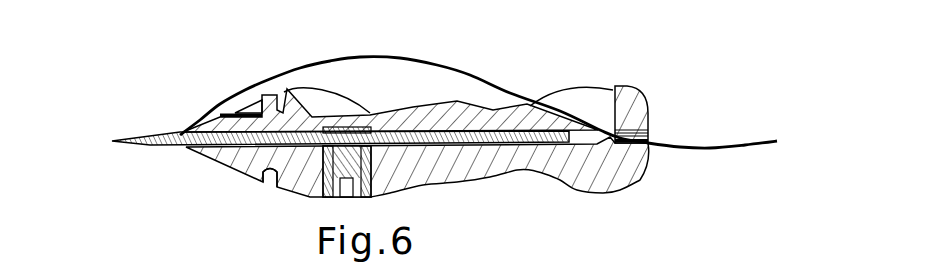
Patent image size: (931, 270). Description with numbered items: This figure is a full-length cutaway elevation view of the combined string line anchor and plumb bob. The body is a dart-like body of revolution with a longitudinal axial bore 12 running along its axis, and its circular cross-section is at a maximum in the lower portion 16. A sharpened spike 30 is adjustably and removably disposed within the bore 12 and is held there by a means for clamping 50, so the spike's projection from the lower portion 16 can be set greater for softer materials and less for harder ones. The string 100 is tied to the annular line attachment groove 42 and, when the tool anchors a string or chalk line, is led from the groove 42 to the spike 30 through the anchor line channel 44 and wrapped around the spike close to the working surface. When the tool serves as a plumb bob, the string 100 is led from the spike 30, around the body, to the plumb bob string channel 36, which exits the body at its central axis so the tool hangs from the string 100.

The longitudinal axial bore 12 is at (578, 140).
The lower portion 16 is at (320, 108).
The sharpened spike 30 is at (123, 145).
The plumb bob string channel 36 is at (584, 108).
The annular line attachment groove 42 is at (262, 183).
The anchor line channel 44 is at (240, 110).
The means for clamping 50 is at (323, 200).
The string 100 is at (245, 100).